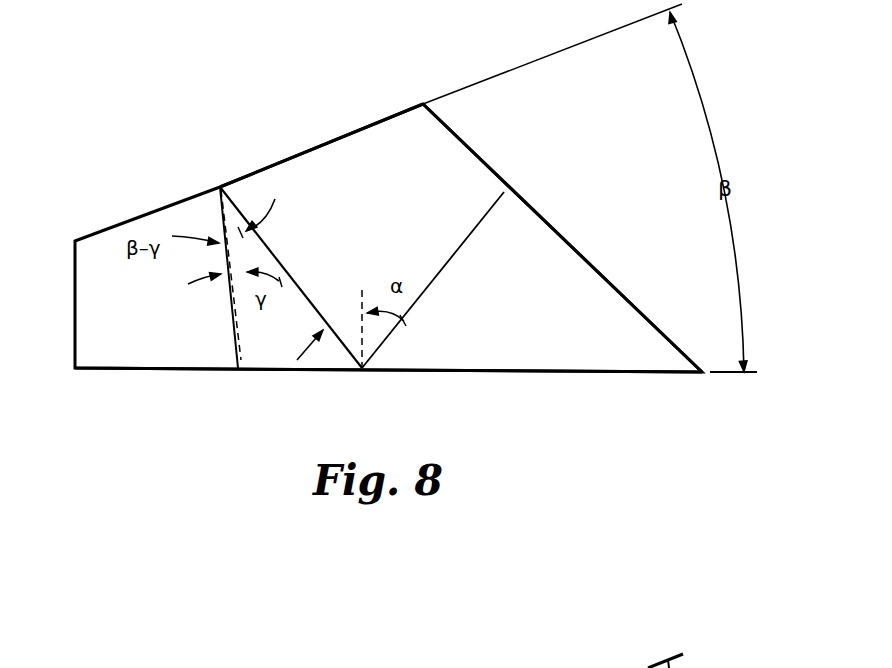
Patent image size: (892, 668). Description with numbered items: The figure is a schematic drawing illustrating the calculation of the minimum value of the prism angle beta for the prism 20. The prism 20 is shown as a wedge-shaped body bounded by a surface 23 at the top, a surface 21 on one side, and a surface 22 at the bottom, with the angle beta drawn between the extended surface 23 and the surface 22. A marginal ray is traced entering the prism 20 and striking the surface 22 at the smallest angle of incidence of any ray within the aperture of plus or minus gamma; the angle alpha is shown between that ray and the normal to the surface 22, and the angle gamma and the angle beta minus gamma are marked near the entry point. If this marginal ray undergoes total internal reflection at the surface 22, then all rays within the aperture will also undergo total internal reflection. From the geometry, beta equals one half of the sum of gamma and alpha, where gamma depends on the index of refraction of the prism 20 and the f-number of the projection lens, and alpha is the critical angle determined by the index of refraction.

The prism 20 is at (370, 83).
The surface 21 is at (480, 152).
The surface 22 is at (495, 372).
The surface 23 is at (297, 150).